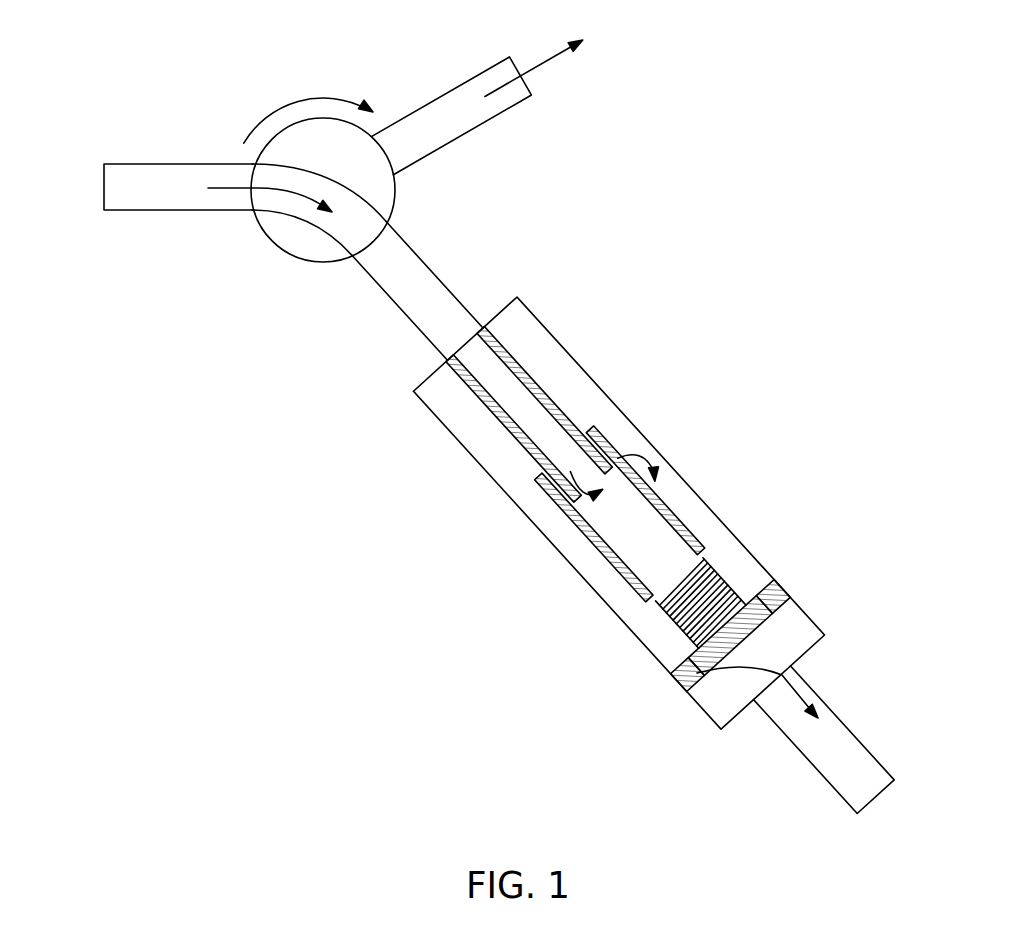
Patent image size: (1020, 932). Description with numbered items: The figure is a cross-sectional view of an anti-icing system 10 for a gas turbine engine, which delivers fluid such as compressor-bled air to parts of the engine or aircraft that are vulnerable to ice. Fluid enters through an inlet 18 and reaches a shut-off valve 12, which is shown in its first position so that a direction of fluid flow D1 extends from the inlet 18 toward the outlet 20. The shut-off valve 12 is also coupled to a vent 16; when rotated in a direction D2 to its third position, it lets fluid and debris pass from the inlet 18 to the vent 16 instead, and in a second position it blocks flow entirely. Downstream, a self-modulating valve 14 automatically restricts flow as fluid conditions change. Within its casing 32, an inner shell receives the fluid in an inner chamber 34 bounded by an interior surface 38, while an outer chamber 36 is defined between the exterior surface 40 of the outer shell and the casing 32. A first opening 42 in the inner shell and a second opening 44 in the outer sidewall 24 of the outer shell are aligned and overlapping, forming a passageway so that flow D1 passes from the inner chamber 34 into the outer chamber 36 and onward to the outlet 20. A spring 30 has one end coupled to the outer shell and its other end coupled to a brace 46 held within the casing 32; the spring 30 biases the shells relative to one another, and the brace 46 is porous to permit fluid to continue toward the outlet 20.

The anti-icing system 10 is at (666, 268).
The shut-off valve 12 is at (343, 165).
The self-modulating valve 14 is at (428, 570).
The vent 16 is at (478, 73).
The inlet 18 is at (88, 186).
The outlet 20 is at (903, 785).
The outer sidewall 24 is at (535, 70).
The spring 30 is at (745, 585).
The casing 32 is at (545, 317).
The inner chamber 34 is at (481, 388).
The outer chamber 36 is at (584, 404).
The interior surface 38 is at (512, 378).
The exterior surface 40 is at (677, 650).
The first opening 42 is at (575, 520).
The second opening 44 is at (630, 434).
The brace 46 is at (750, 628).
The direction of fluid flow D1 is at (235, 191).
The direction of fluid flow to vent D2 is at (300, 100).